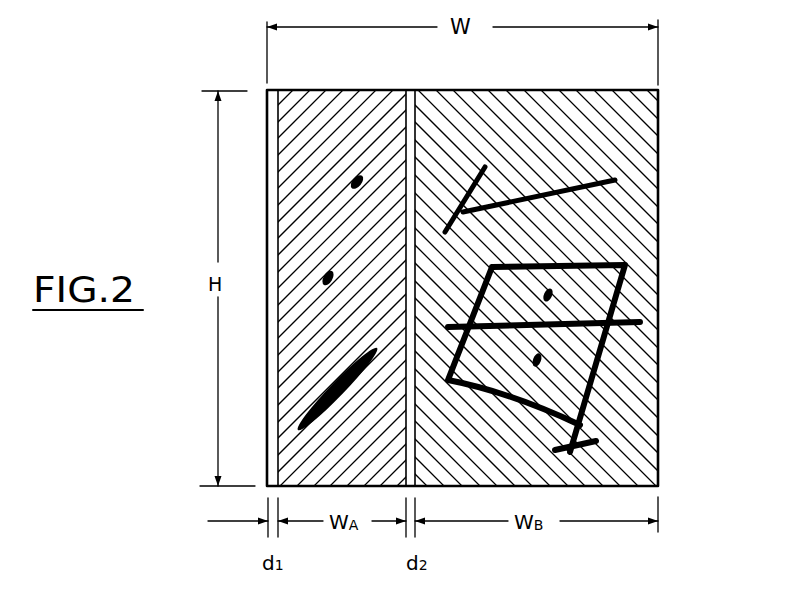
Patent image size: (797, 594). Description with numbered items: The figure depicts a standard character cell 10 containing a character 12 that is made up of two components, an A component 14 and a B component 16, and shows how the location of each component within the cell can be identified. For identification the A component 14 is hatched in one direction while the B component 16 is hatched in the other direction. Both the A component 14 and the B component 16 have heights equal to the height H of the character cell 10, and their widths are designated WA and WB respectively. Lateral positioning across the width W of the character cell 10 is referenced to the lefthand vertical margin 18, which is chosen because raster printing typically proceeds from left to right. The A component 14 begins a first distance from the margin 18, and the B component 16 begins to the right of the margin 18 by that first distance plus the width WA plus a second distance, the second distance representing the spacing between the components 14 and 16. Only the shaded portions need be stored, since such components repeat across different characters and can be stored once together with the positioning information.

The character cell 10 is at (658, 197).
The character 12 is at (614, 352).
The A component 14 is at (404, 85).
The B component 16 is at (648, 85).
The lefthand vertical margin 18 is at (268, 420).